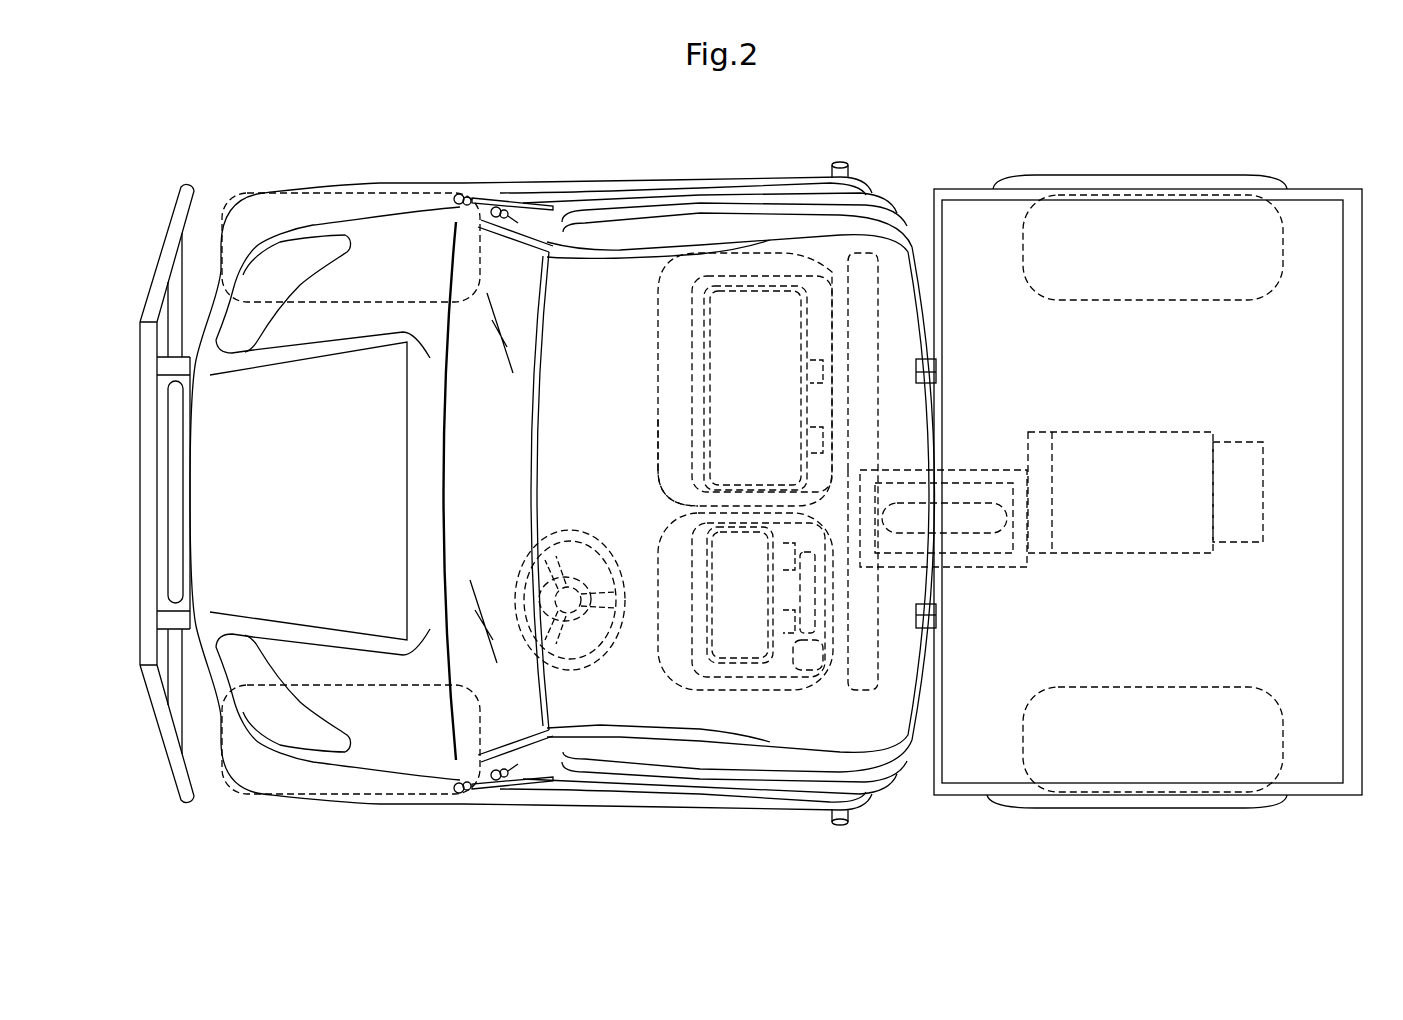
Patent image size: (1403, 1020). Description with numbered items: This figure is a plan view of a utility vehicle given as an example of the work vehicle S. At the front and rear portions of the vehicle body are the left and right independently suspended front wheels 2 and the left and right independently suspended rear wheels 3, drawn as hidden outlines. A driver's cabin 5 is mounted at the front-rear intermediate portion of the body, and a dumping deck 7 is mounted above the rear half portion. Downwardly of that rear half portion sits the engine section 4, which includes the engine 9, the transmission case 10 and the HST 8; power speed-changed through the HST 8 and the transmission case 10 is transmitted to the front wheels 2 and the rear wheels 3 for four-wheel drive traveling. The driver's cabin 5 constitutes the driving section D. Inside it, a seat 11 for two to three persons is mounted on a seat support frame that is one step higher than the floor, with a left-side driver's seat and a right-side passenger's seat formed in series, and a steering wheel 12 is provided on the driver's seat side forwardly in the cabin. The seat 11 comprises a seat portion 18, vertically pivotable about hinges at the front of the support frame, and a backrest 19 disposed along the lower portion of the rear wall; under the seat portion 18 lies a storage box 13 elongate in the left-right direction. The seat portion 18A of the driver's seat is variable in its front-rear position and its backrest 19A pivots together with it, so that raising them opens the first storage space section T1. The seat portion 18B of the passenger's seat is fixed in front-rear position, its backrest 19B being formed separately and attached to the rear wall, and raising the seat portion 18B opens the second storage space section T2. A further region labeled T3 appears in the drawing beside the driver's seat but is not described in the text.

The work vehicle S is at (372, 166).
The front wheels 2 is at (237, 197).
The rear wheels 3 is at (1142, 192).
The engine section 4 is at (1042, 567).
The driver's cabin 5 is at (581, 188).
The dumping deck 7 is at (1213, 612).
The HST (hydrostatic stepless speed changer) 8 is at (1233, 441).
The engine 9 is at (983, 567).
The transmission case 10 is at (1122, 432).
The seat 11 is at (645, 450).
The steering wheel 12 is at (521, 580).
The storage box 13 is at (697, 488).
The seat portion 18 is at (695, 498).
The seat portion for the driver's seat 18A is at (714, 628).
The seat portion of the passenger's seat 18B is at (695, 379).
The backrest 19 is at (929, 491).
The backrest of the driver's seat 19A is at (878, 660).
The backrest of the passenger's seat 19B is at (878, 308).
The first storage space section T1 is at (727, 573).
The second storage space section T2 is at (738, 443).
The lever target position T3 is at (808, 660).
The driving section D is at (715, 712).